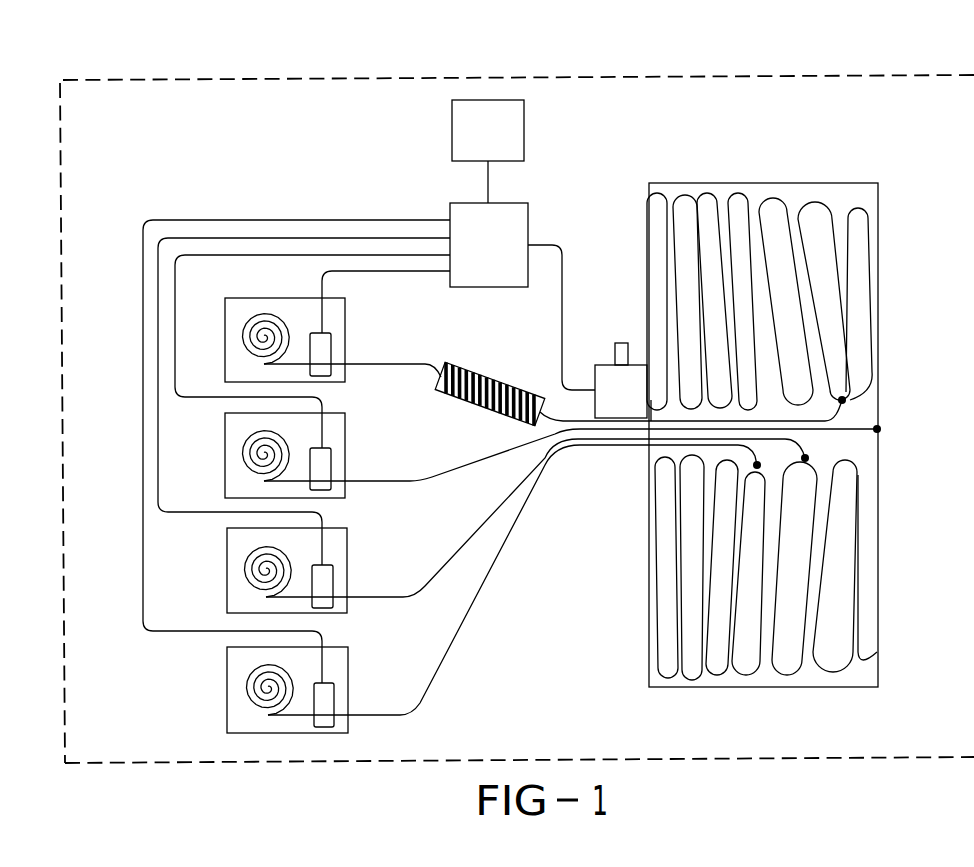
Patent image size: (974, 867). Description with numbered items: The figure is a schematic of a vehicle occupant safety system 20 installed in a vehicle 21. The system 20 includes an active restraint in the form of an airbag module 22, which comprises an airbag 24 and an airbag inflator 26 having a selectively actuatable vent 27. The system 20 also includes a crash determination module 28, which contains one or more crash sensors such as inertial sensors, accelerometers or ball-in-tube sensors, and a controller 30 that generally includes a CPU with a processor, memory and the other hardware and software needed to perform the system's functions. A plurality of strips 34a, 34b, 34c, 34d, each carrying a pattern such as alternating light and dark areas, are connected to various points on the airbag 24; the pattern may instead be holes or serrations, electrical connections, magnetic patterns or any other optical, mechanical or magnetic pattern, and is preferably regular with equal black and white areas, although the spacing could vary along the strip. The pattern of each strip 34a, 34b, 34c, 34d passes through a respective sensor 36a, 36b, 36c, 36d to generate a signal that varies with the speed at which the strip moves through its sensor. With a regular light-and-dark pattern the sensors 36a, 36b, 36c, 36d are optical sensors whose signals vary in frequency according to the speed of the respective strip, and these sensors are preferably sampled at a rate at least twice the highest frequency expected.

The vehicle occupant safety system 20 is at (372, 102).
The vehicle 21 is at (528, 659).
The airbag module 22 is at (738, 181).
The airbag 24 is at (801, 243).
The airbag inflator 26 is at (635, 404).
The selectively actuatable vent 27 is at (613, 346).
The crash determination module 28 is at (524, 141).
The controller 30 is at (528, 230).
The strip 34a is at (842, 400).
The strip 34b is at (877, 429).
The strip 34c is at (805, 458).
The strip 34d is at (757, 465).
The sensor 36a is at (328, 346).
The sensor 36b is at (328, 460).
The sensor 36c is at (328, 576).
The sensor 36d is at (328, 694).